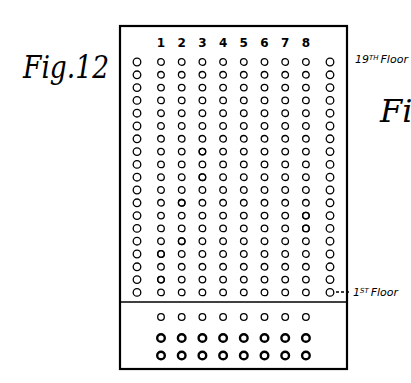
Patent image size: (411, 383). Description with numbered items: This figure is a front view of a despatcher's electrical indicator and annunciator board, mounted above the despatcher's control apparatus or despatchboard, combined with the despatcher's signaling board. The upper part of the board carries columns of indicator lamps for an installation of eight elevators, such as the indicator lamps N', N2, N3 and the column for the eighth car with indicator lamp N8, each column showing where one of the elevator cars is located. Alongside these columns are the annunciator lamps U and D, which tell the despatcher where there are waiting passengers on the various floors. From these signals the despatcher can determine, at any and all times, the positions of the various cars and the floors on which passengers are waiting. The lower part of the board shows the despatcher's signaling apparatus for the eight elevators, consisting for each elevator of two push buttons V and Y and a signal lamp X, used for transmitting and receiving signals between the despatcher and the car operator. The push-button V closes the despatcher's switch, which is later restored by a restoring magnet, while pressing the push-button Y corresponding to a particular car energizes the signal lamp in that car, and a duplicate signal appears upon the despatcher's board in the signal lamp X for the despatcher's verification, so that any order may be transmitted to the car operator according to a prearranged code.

The annunciator lamp U is at (137, 58).
The annunciator lamp D is at (330, 58).
The indicator lamp N3 is at (199, 180).
The indicator lamp N2 is at (178, 240).
The indicator lamp N' is at (123, 267).
The indicator lamp N8 is at (304, 229).
The despatcher's signal lamp X is at (155, 317).
The push-button V is at (154, 338).
The push-button Y is at (154, 354).